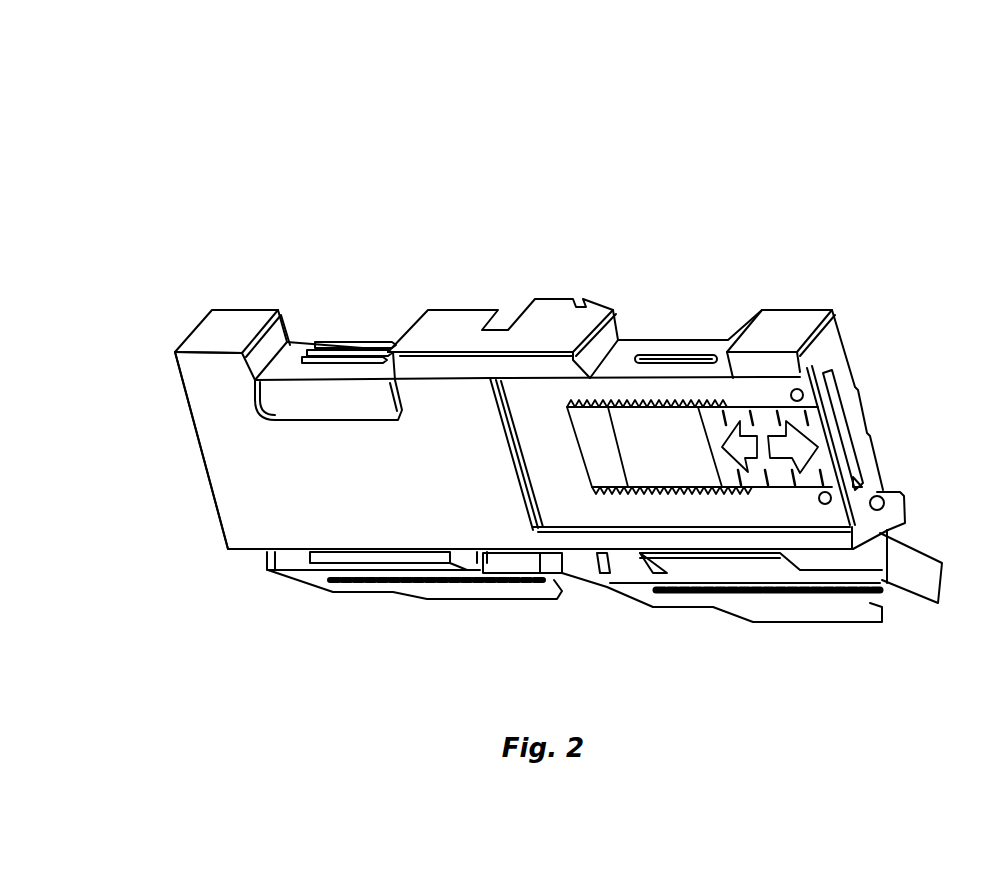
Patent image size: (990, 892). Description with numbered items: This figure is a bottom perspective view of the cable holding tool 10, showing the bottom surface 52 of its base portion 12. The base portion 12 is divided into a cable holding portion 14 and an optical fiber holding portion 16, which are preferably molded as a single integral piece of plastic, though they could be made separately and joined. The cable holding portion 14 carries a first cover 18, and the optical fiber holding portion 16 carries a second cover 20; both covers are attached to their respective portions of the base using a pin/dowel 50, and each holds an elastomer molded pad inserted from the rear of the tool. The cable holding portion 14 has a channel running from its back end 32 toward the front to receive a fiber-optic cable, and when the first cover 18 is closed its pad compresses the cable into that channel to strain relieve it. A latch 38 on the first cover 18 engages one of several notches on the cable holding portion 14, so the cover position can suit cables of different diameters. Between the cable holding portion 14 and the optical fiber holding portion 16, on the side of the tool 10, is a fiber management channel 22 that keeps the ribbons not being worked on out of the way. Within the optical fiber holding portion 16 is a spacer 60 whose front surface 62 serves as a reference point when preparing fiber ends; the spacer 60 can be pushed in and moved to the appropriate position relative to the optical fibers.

The cable holding tool 10 is at (240, 188).
The base portion 12 is at (213, 504).
The cable holding portion 14 is at (208, 430).
The optical fiber holding portion 16 is at (828, 338).
The first cover 18 is at (458, 602).
The second cover 20 is at (826, 624).
The fiber management channel 22 is at (522, 314).
The back end 32 is at (162, 357).
The latch 38 is at (348, 346).
The pin/dowel 50 is at (880, 503).
The bottom surface 52 is at (270, 572).
The spacer 60 is at (757, 483).
The front surface 62 is at (833, 428).